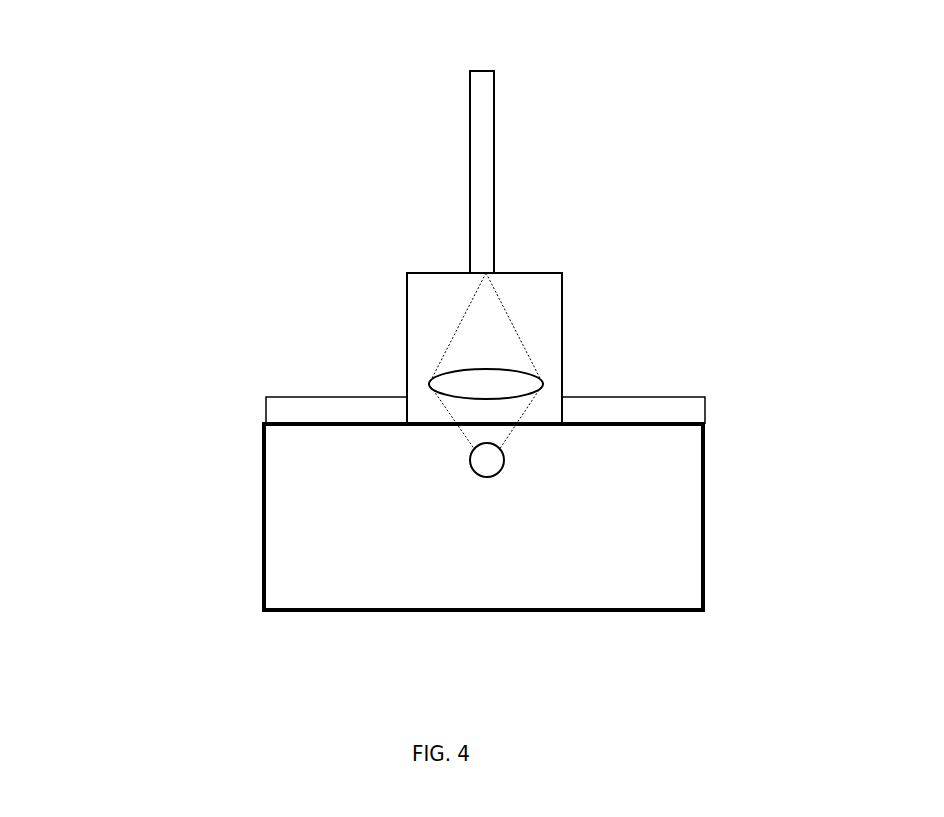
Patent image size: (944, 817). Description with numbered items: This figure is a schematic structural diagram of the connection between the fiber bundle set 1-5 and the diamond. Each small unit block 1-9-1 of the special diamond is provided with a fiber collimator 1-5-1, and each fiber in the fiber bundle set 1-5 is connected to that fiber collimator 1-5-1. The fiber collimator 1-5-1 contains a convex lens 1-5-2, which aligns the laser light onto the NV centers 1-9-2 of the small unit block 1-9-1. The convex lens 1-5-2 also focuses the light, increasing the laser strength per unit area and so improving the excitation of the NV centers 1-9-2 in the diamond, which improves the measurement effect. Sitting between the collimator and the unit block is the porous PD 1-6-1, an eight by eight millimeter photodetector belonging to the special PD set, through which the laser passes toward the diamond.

The fiber bundle set 1-5 is at (383, 139).
The fiber collimator 1-5-1 is at (606, 306).
The convex lens 1-5-2 is at (357, 264).
The porous PD 1-6-1 is at (372, 328).
The small unit block 1-9-1 is at (559, 560).
The NV centers 1-9-2 is at (340, 571).